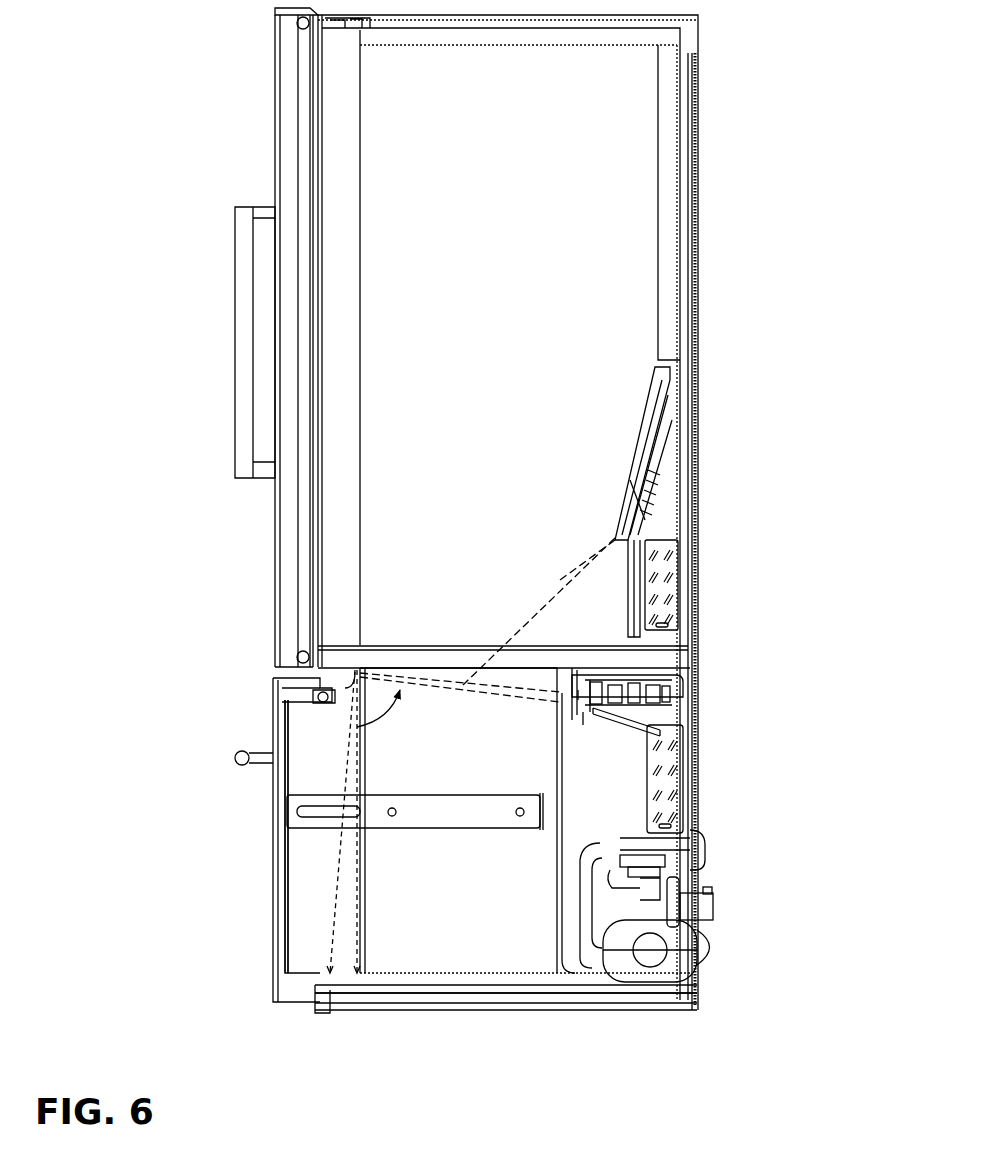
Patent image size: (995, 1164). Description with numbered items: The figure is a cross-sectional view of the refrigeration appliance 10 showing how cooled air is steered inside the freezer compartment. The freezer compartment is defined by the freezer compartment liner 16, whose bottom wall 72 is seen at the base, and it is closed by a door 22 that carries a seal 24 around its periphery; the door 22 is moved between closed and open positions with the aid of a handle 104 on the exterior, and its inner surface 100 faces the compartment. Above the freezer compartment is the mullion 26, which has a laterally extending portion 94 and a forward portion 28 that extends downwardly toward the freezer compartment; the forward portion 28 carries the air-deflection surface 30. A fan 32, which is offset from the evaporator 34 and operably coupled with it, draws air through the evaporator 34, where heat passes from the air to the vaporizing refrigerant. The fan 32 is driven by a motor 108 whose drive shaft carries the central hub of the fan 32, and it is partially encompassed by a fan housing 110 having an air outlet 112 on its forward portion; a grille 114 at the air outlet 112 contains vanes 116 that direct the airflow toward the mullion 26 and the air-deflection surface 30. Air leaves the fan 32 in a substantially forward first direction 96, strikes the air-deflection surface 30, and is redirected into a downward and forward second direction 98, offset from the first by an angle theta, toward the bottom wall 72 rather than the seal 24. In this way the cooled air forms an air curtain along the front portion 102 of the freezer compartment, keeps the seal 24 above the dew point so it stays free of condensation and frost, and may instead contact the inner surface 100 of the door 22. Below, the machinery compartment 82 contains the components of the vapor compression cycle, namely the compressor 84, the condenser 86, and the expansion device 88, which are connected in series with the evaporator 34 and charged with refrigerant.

The refrigeration appliance 10 is at (725, 128).
The freezer compartment liner 16 is at (410, 915).
The door 22 is at (272, 712).
The seal 24 is at (312, 697).
The mullion 26 is at (512, 660).
The forward portion 28 is at (337, 675).
The air-deflection surface 30 is at (355, 675).
The fan 32 is at (662, 673).
The evaporator 34 is at (673, 783).
The bottom wall 72 is at (410, 987).
The machinery compartment 82 is at (680, 880).
The compressor 84 is at (673, 957).
The condenser 86 is at (687, 915).
The expansion device 88 is at (653, 866).
The laterally extending portion 94 is at (620, 665).
The first direction 96 is at (630, 528).
The second direction 98 is at (347, 763).
The inner surface 100 is at (293, 882).
The front portion 102 is at (303, 890).
The handle 104 is at (236, 760).
The motor 108 is at (662, 675).
The fan housing 110 is at (660, 700).
The air outlet 112 is at (583, 712).
The grille 114 is at (563, 705).
The vanes 116 is at (573, 693).